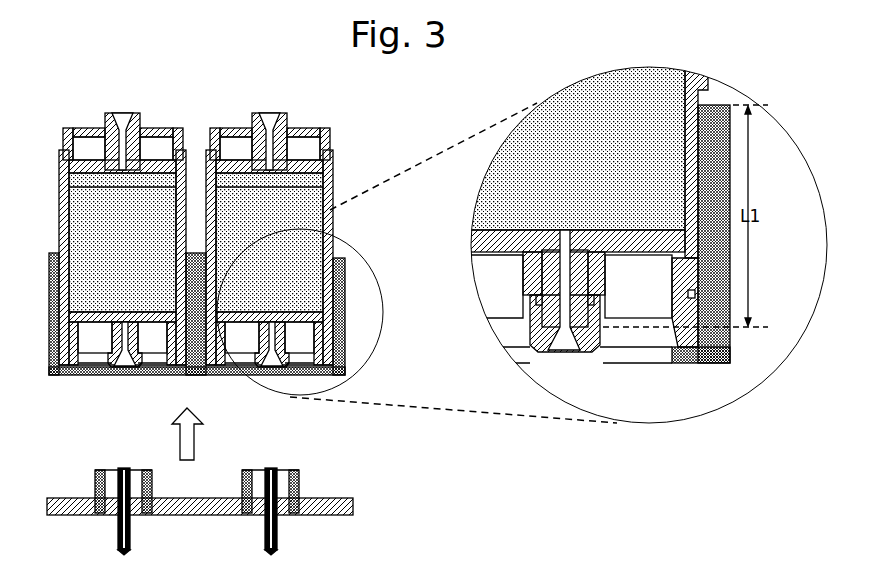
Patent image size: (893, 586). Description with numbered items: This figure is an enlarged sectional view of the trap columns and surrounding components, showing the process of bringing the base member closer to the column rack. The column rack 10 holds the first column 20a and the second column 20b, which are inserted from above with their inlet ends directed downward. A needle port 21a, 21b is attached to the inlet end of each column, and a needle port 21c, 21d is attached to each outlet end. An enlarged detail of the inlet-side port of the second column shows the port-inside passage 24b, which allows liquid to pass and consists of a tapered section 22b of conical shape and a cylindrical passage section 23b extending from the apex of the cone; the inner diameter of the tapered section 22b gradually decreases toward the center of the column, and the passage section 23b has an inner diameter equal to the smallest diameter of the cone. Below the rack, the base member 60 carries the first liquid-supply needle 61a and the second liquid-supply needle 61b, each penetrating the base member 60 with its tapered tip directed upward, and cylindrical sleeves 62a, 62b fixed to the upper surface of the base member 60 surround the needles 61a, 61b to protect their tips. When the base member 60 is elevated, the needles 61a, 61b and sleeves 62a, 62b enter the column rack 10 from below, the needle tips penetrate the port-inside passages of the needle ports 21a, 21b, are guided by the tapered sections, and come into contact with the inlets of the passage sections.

The column rack 10 is at (335, 254).
The first column 20a is at (119, 249).
The second column 20b is at (270, 224).
The needle port 21a is at (134, 368).
The needle port 21b is at (428, 323).
The needle port 21c is at (140, 113).
The needle port 21d is at (253, 113).
The tapered section 22b is at (540, 347).
The passage section 23b is at (537, 323).
The port-inside passage 24b is at (496, 309).
The base member 60 is at (353, 507).
The first liquid-supply needle 61a is at (118, 545).
The second liquid-supply needle 61b is at (265, 545).
The sleeve 62a is at (95, 480).
The sleeve 62b is at (299, 480).